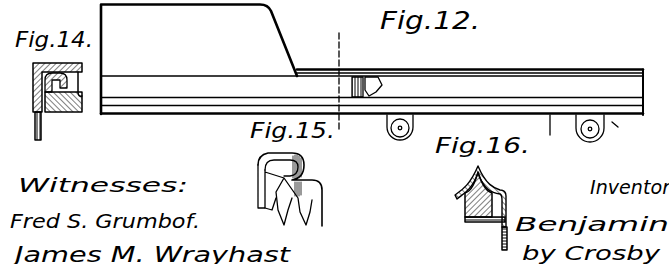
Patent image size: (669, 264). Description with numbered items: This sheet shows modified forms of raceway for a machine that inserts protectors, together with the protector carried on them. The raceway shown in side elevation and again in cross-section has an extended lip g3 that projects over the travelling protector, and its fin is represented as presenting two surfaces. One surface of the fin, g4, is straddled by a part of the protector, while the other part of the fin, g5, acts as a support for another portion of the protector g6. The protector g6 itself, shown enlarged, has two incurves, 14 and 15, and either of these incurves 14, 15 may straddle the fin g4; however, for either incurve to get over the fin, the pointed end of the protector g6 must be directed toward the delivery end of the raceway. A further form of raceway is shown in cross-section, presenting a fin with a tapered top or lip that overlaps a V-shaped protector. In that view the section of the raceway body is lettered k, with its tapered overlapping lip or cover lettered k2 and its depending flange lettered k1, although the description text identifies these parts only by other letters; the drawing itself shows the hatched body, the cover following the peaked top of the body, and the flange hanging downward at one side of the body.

In FIG. 12, the extended lip g3 is at (443, 71).
In FIG. 14, the extended lip g3 is at (78, 63).
In FIG. 12, the fin surface g4 is at (478, 97).
In FIG. 14, the fin surface g4 is at (33, 102).
In FIG. 12, the fin surface g5 is at (560, 133).
In FIG. 14, the fin surface g5 is at (72, 113).
In FIG. 12, the protector g6 is at (365, 78).
In FIG. 14, the protector g6 is at (80, 82).
In FIG. 15, the protector g6 is at (266, 170).
In FIG. 15, the incurve 14 is at (262, 193).
In FIG. 15, the incurve 15 is at (302, 173).
In FIG. 16, the cap block k is at (467, 212).
In FIG. 16, the hanging flange of cap k1 is at (487, 182).
In FIG. 16, the sheet metal cover of cap k2 is at (467, 194).